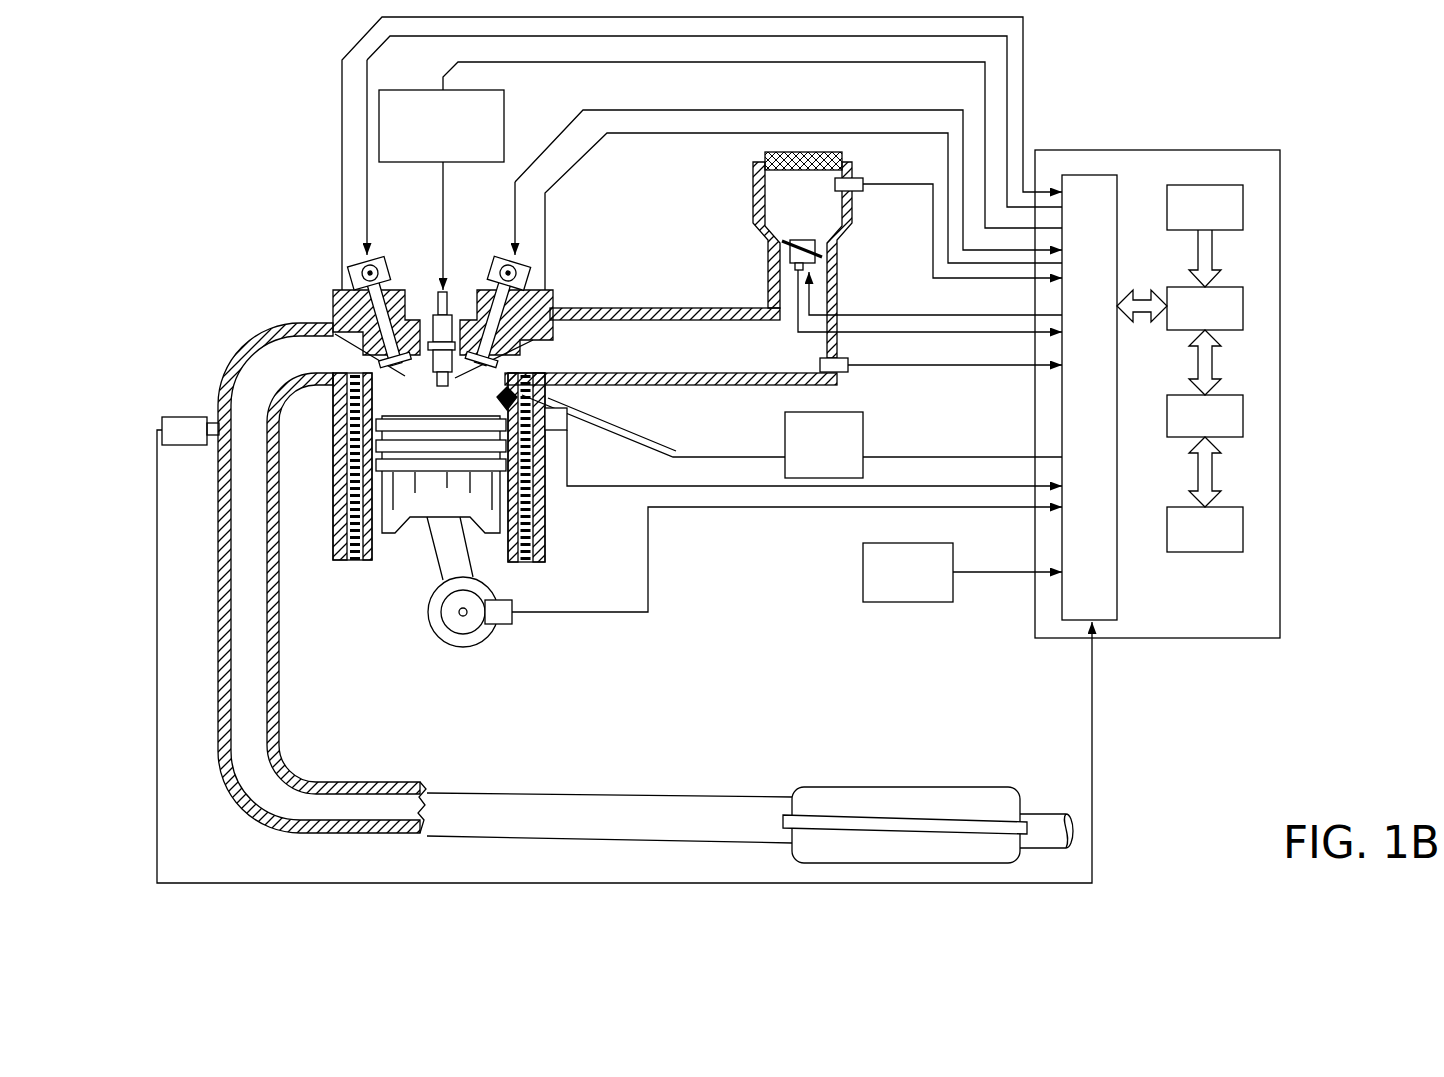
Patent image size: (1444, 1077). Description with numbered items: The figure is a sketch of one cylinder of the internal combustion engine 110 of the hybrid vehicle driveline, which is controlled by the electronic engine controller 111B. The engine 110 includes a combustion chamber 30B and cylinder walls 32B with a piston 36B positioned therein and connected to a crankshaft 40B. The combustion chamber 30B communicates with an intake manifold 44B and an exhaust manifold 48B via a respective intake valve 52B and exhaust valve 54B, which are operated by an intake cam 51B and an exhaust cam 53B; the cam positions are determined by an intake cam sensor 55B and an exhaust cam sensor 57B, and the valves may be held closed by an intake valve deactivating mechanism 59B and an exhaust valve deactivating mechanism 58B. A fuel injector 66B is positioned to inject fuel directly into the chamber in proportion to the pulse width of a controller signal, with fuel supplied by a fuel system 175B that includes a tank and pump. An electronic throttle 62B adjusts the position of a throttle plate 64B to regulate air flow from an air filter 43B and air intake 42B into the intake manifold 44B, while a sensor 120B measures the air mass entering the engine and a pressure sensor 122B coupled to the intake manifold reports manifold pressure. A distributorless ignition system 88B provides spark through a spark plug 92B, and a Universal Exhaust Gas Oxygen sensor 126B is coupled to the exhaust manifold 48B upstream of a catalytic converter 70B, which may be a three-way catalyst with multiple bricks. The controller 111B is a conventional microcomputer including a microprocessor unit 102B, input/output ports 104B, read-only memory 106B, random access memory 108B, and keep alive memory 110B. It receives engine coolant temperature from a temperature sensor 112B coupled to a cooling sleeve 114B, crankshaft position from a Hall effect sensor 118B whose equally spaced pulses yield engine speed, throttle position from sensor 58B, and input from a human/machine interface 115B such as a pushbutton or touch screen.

The internal combustion engine 110 is at (262, 240).
The distributorless ignition system 88B is at (395, 90).
The exhaust cam 53B is at (377, 253).
The intake cam 51B is at (490, 252).
The exhaust cam sensor 57B is at (356, 277).
The intake cam sensor 55B is at (527, 279).
The exhaust valve 54B is at (333, 329).
The intake valve 52B is at (488, 361).
The exhaust valve deactivating mechanism 58B is at (383, 278).
The intake valve deactivating mechanism 59B is at (495, 279).
The spark plug 92B is at (446, 292).
The exhaust manifold 48B is at (322, 578).
The intake manifold 44B is at (671, 346).
The air intake 42B is at (802, 260).
The air filter 43B is at (766, 152).
The electronic throttle 62B is at (808, 246).
The throttle plate 64B is at (781, 250).
The air mass sensor 120B is at (858, 178).
The pressure sensor 122B is at (848, 373).
The combustion chamber 30B is at (438, 393).
The cylinder walls 32B is at (378, 548).
The cooling sleeve 114B is at (530, 503).
The piston 36B is at (423, 503).
The crankshaft 40B is at (446, 641).
The Hall effect sensor 118B is at (513, 601).
The fuel injector 66B is at (566, 430).
The fuel system 175B is at (923, 445).
The temperature sensor 112B is at (803, 447).
The human/machine interface 115B is at (962, 572).
The Universal Exhaust Gas Oxygen sensor 126B is at (163, 418).
The catalytic converter 70B is at (835, 787).
The electronic engine controller 111B is at (1268, 150).
The input/output ports 104B is at (1117, 182).
The read-only memory 106B is at (1243, 203).
The microprocessor unit 102B is at (1243, 300).
The random access memory 108B is at (1243, 413).
The keep alive memory 110B is at (1243, 523).